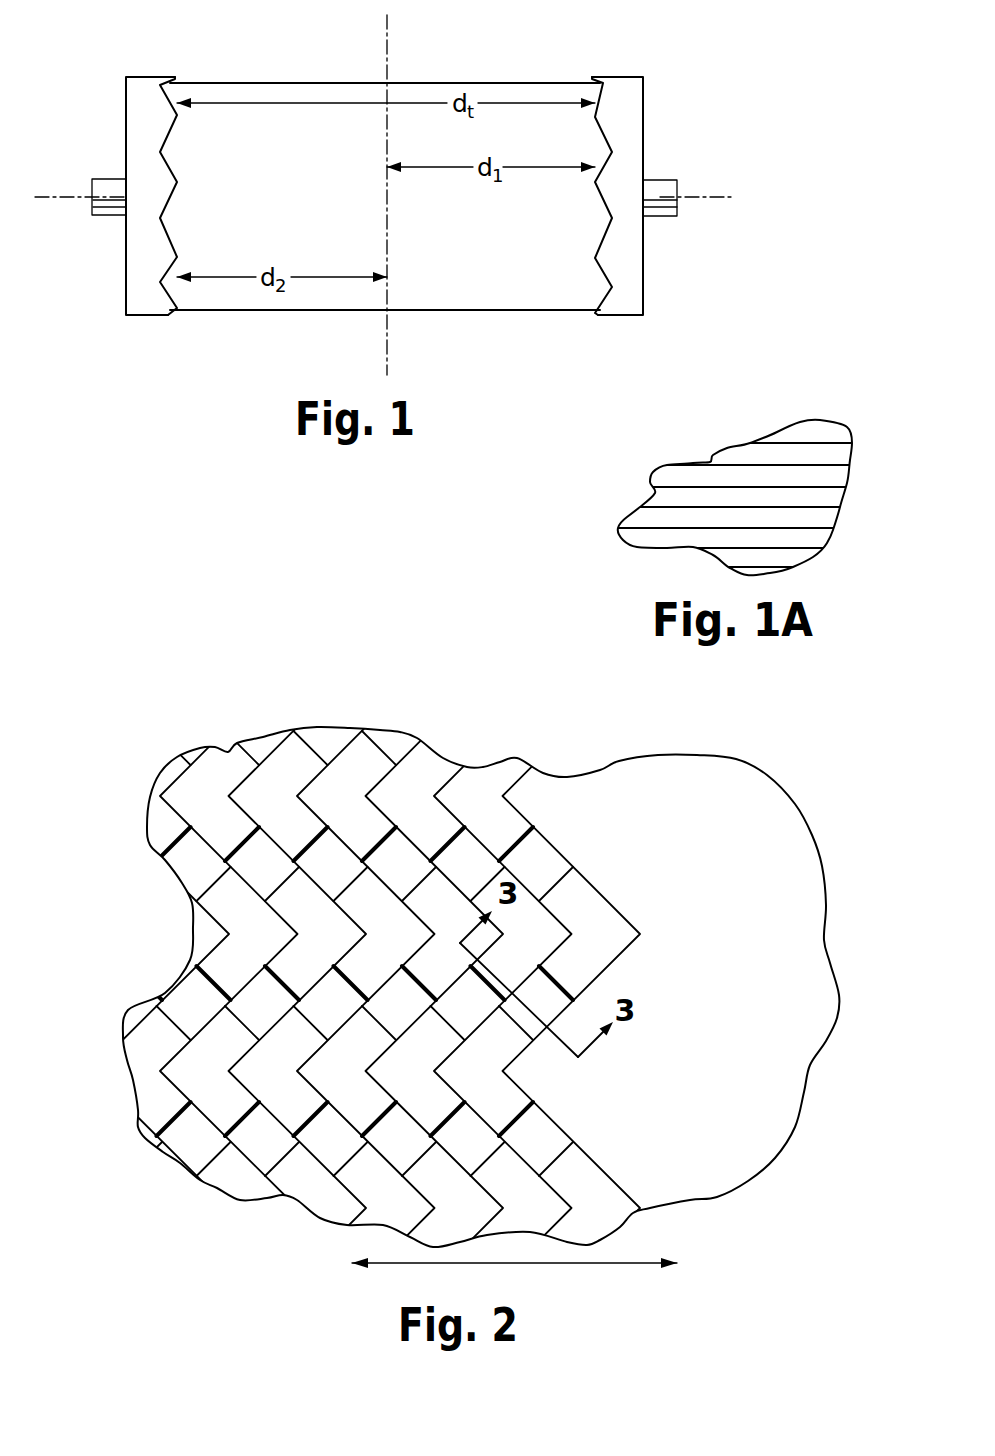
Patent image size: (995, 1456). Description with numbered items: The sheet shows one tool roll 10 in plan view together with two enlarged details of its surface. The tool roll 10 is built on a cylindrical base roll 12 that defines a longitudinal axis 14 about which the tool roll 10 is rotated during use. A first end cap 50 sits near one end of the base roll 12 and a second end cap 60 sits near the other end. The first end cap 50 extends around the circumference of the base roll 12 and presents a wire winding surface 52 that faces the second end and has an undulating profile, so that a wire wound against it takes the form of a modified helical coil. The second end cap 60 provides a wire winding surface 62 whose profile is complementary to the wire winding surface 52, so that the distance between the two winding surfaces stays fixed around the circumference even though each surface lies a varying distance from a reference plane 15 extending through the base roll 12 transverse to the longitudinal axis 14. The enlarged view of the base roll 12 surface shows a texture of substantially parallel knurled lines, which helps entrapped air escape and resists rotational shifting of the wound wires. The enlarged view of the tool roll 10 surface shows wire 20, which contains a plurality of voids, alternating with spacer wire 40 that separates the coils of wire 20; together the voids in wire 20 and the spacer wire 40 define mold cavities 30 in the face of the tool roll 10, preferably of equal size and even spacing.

In FIG. 1, the tool roll 10 is at (614, 41).
In FIG. 1, the cylindrical base roll 12 is at (535, 83).
In FIG. 1A, the cylindrical base roll 12 is at (830, 545).
In FIG. 1, the longitudinal axis 14 is at (718, 196).
In FIG. 2, the longitudinal axis 14 is at (623, 1262).
In FIG. 1, the reference plane 15 is at (388, 42).
In FIG. 2, the wire 20 is at (228, 758).
In FIG. 2, the mold cavities 30 is at (542, 855).
In FIG. 2, the spacer wire 40 is at (320, 742).
In FIG. 1, the first end cap 50 is at (638, 287).
In FIG. 2, the first end cap 50 is at (705, 829).
In FIG. 1, the wire winding surface 52 is at (600, 282).
In FIG. 2, the wire winding surface 52 is at (610, 906).
In FIG. 1, the second end cap 60 is at (137, 296).
In FIG. 1, the wire winding surface 62 is at (176, 302).